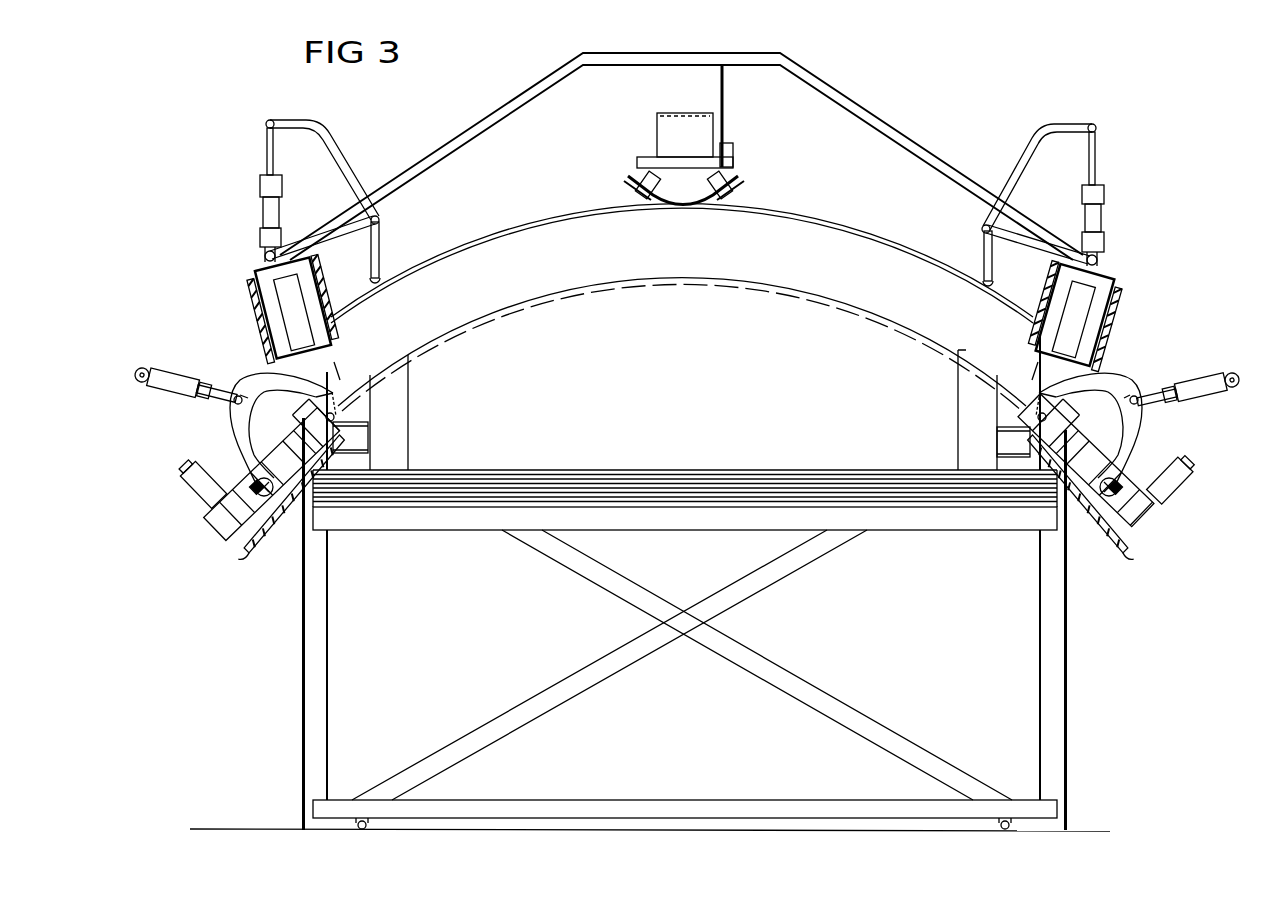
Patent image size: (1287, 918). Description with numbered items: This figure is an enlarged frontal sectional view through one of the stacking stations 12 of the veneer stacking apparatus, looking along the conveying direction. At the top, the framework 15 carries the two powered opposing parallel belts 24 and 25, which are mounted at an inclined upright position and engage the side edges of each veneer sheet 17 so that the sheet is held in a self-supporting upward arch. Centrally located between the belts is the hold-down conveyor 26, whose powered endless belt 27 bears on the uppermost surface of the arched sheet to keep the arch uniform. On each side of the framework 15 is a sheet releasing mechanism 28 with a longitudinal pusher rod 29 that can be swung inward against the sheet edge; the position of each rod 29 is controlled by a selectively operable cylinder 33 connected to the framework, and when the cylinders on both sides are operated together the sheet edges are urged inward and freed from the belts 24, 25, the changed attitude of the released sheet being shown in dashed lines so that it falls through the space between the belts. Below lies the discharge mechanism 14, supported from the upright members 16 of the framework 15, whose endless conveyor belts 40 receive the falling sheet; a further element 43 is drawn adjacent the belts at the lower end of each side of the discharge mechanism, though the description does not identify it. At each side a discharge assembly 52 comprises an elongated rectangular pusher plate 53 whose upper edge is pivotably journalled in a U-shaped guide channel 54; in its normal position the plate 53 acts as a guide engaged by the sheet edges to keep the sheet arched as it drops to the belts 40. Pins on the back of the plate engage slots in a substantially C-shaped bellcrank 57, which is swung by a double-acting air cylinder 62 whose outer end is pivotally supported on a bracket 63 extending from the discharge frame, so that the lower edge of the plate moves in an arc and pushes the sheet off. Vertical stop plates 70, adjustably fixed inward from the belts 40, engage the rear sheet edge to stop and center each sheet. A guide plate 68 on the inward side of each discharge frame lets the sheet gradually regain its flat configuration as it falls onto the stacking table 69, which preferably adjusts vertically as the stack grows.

The stacking station 12 is at (452, 193).
The discharge mechanism 14 is at (230, 436).
The framework 15 is at (300, 632).
The upright member 16 is at (300, 703).
The sheet 17 is at (846, 229).
The belt 24 is at (312, 270).
The belt 25 is at (1032, 337).
The hold-down conveyor 26 is at (727, 133).
The endless belt 27 is at (685, 112).
The sheet releasing mechanism 28 is at (347, 153).
The pusher rod 29 is at (383, 283).
The cylinder 33 is at (262, 216).
The endless conveyor belt 40 is at (345, 421).
The clamp cylinder 43 is at (194, 470).
The discharge assembly 52 is at (238, 397).
The pusher plate 53 is at (340, 383).
The U-shaped guide channel 54 is at (338, 358).
The bellcrank 57 is at (254, 373).
The air cylinder 62 is at (175, 370).
The bracket 63 is at (212, 380).
The guide plate 68 is at (250, 548).
The stacking table 69 is at (808, 560).
The vertical stop plate 70 is at (392, 430).